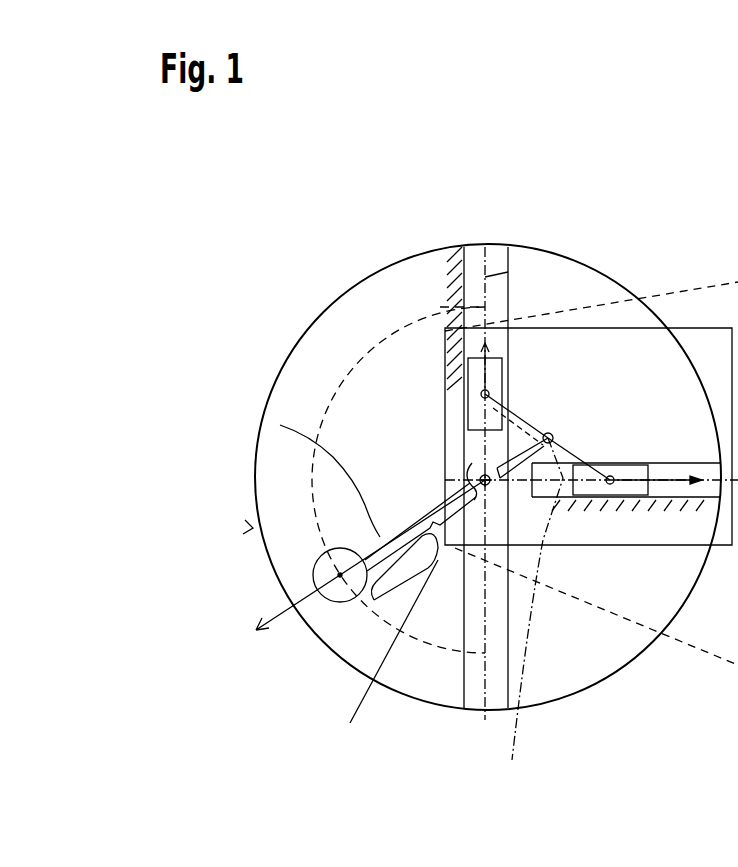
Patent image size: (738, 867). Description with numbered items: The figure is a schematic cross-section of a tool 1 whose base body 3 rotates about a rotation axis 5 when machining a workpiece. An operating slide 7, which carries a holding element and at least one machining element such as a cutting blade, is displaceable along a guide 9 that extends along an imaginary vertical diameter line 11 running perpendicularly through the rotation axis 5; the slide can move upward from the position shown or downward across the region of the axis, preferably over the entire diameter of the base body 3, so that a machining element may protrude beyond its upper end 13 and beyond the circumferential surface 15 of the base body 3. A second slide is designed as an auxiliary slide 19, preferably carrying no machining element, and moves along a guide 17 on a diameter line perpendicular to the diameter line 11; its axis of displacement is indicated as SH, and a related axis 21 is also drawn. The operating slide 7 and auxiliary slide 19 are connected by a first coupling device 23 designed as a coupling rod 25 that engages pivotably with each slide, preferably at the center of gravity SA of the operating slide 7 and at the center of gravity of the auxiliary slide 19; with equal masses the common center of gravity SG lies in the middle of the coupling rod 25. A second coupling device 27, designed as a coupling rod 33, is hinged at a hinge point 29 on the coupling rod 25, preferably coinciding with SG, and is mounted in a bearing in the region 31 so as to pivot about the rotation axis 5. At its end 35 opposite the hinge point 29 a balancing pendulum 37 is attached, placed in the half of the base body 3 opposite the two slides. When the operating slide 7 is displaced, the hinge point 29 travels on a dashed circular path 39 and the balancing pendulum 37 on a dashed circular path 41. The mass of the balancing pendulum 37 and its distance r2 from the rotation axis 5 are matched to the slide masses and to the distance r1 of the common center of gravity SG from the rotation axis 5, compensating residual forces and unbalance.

The tool 1 is at (300, 266).
The base body 3 is at (264, 458).
The rotation axis 5 is at (388, 657).
The operating slide 7 is at (475, 417).
The guide 9 is at (471, 250).
The diameter line 11 is at (508, 270).
The upper end 13 is at (467, 393).
The circumferential surface 15 is at (253, 528).
The guide 17 is at (498, 545).
The auxiliary slide 19 is at (578, 492).
The piston axis 21 is at (531, 609).
The first coupling device 23 is at (516, 408).
The coupling rod 25 is at (563, 424).
The second coupling device 27 is at (473, 510).
The hinge point 29 is at (555, 440).
The region 31 is at (473, 467).
The coupling rod 33 is at (422, 500).
The end 35 is at (377, 540).
The balancing pendulum 37 is at (312, 578).
The circular path 39 is at (440, 640).
The circular path 41 is at (440, 307).
The center of gravity of the operating slide SA is at (470, 396).
The common center of gravity SG is at (552, 436).
The stroke axis SH is at (597, 540).
The distance of the common center of gravity from the rotation axis r1 is at (519, 398).
The distance of the balancing pendulum center of gravity from the rotation axis r2 is at (370, 602).